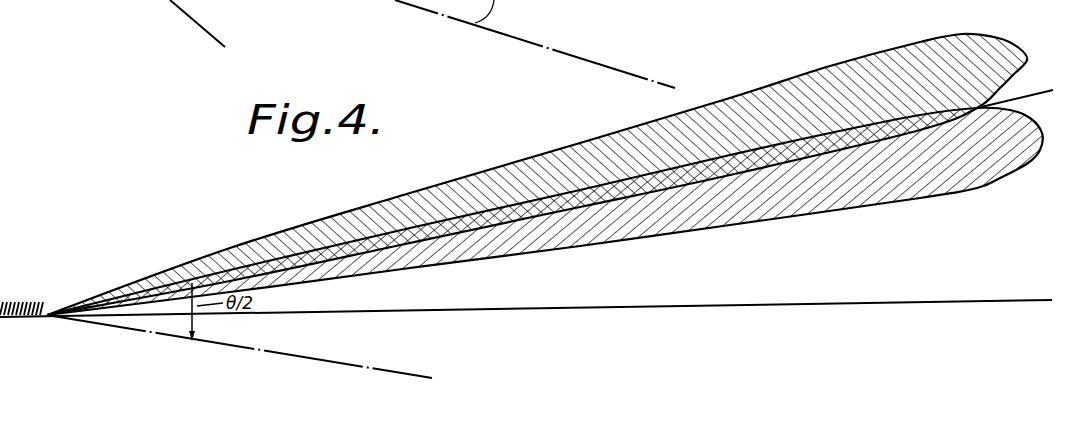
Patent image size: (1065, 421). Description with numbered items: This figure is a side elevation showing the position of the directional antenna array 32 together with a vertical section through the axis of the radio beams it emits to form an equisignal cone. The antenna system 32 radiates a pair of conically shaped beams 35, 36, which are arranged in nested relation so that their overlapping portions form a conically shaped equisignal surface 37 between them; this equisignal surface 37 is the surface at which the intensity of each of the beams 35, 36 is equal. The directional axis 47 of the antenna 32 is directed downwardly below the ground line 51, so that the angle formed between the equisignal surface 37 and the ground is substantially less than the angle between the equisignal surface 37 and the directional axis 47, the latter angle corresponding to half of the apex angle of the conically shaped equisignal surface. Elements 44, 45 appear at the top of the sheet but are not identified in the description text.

The directional antenna array 32 is at (25, 302).
The beam 35 is at (1013, 50).
The beam 36 is at (1034, 145).
The equisignal surface 37 is at (1028, 97).
The reflector element 44 is at (134, 0).
The reflector element 45 is at (203, 27).
The directional axis 47 is at (302, 357).
The ground line 51 is at (892, 303).